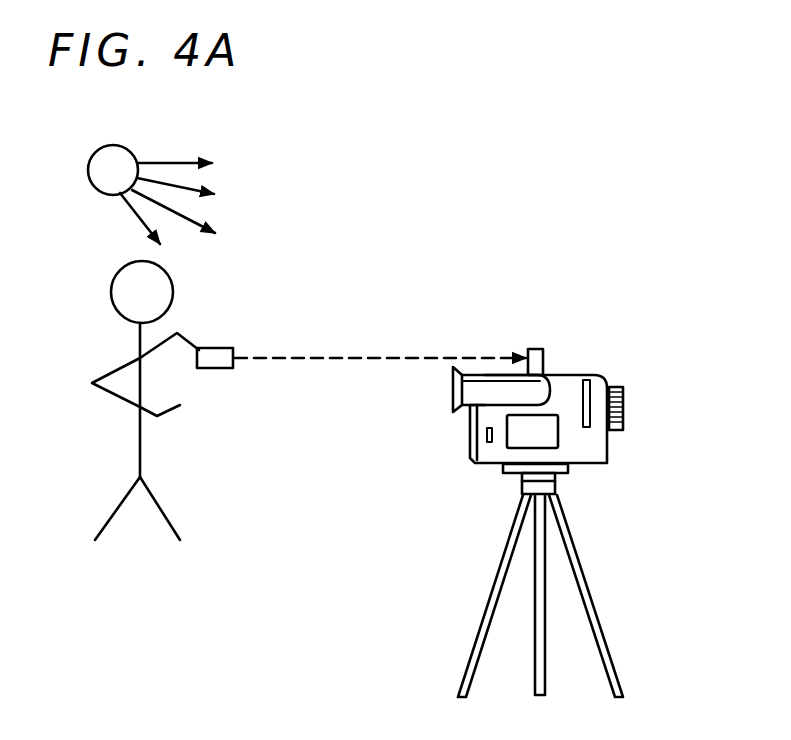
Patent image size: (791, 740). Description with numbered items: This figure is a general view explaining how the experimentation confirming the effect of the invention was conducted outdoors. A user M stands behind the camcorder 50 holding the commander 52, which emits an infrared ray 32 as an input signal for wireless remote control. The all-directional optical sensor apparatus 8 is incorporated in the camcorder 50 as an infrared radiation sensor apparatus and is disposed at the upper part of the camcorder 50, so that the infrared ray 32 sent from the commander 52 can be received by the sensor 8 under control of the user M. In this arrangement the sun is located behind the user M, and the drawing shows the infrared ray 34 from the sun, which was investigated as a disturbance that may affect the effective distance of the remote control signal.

The infrared ray from sun 34 is at (137, 214).
The user M is at (118, 366).
The commander 52 is at (217, 347).
The infrared ray 32 is at (333, 355).
The camcorder 50 is at (612, 378).
The all-directional optical sensor apparatus 8 is at (537, 348).